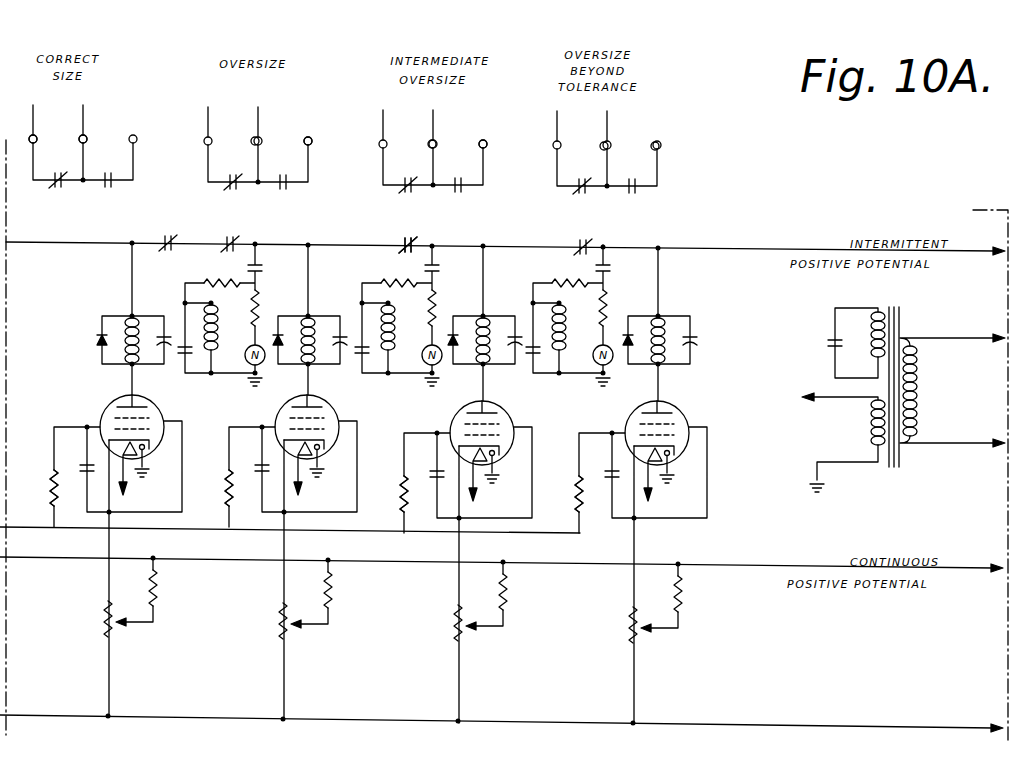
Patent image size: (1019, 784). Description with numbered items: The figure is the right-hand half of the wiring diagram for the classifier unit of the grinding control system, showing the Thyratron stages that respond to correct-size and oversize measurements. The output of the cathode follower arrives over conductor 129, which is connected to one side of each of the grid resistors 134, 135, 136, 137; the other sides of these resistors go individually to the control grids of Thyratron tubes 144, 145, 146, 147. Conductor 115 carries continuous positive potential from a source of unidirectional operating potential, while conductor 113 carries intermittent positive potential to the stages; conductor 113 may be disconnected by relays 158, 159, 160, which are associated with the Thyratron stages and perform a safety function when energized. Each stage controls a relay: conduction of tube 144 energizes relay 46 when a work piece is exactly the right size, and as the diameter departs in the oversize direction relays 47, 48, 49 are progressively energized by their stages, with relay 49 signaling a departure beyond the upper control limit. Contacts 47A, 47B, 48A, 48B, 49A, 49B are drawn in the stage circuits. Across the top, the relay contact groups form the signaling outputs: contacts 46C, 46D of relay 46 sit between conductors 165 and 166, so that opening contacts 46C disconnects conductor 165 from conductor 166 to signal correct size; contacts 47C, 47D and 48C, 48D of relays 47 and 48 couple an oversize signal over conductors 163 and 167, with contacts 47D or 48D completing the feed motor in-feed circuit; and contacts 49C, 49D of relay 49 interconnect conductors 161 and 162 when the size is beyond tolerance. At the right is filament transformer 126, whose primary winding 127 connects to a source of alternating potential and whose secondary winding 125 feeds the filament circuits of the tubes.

The conductor 113 is at (770, 249).
The conductor 115 is at (770, 565).
The secondary winding 125 is at (870, 428).
The filament transformer 126 is at (902, 452).
The primary winding 127 is at (918, 392).
The conductor 129 is at (30, 530).
The grid resistor 134 is at (50, 488).
The grid resistor 135 is at (225, 497).
The grid resistor 136 is at (402, 502).
The grid resistor 137 is at (576, 502).
The Thyratron tube 144 is at (160, 410).
The Thyratron tube 145 is at (340, 409).
The Thyratron tube 146 is at (510, 420).
The Thyratron tube 147 is at (686, 416).
The relay 158 is at (216, 318).
The relay 159 is at (395, 345).
The relay 160 is at (567, 345).
The conductor 161 is at (604, 124).
The conductor 162 is at (657, 124).
The conductor 163 is at (257, 122).
The conductor 165 is at (35, 120).
The conductor 166 is at (85, 127).
The conductor 167 is at (310, 122).
The relay 46 is at (152, 328).
The relay 47 is at (328, 328).
The relay 48 is at (503, 330).
The relay 49 is at (678, 334).
The contacts 46C is at (58, 188).
The contacts 46D is at (108, 188).
The contacts 47A is at (236, 236).
The contacts 47B is at (264, 268).
The contacts 47C is at (231, 190).
The contacts 47D is at (283, 190).
The contacts 48A is at (413, 238).
The contacts 48B is at (440, 270).
The contacts 48C is at (409, 193).
The contacts 48D is at (458, 193).
The contacts 49A is at (587, 240).
The contacts 49B is at (612, 272).
The contacts 49C is at (583, 194).
The contacts 49D is at (633, 194).